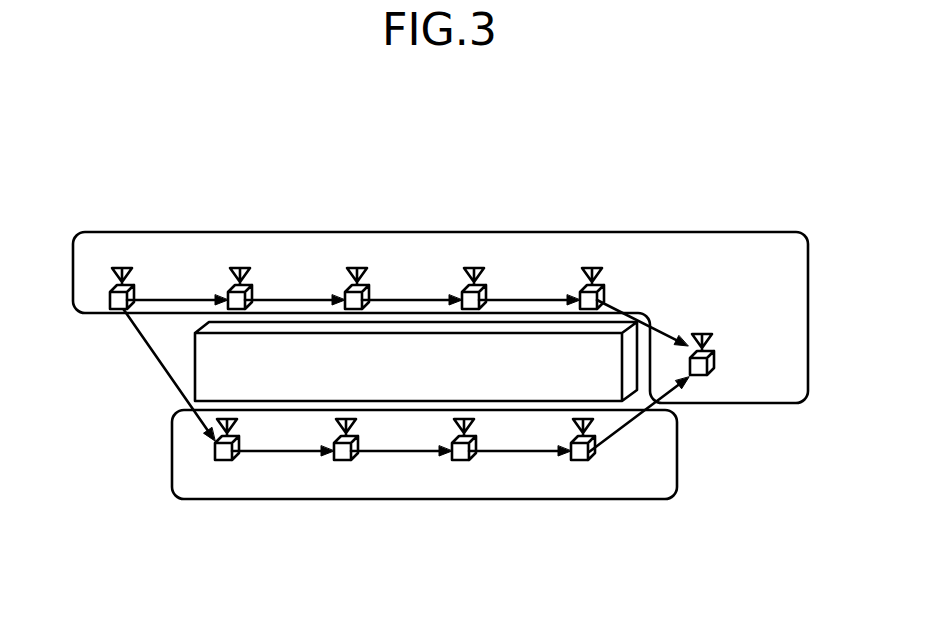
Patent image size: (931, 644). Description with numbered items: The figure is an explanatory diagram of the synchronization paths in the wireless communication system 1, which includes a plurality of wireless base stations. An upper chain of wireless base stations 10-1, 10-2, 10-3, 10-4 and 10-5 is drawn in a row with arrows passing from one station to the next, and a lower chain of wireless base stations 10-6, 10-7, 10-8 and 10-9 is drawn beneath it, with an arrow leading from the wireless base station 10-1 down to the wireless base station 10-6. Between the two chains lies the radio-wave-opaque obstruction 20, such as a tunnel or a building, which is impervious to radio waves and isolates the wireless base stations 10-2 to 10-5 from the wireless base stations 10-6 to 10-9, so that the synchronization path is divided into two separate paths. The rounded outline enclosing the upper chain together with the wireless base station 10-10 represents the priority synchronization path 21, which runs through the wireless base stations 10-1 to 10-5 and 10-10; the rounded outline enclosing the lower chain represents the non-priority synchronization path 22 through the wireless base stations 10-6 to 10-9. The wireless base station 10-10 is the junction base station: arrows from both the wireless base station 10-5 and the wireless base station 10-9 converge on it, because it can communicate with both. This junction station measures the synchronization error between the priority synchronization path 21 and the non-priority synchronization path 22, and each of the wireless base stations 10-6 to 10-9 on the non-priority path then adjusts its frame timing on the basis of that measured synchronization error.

The wireless communication system 1 is at (537, 146).
The wireless base station 10-1 is at (122, 268).
The wireless base station 10-2 is at (240, 268).
The wireless base station 10-3 is at (357, 268).
The wireless base station 10-4 is at (474, 268).
The wireless base station 10-5 is at (592, 268).
The wireless base station 10-6 is at (226, 461).
The wireless base station 10-7 is at (345, 461).
The wireless base station 10-8 is at (463, 461).
The wireless base station 10-9 is at (581, 461).
The wireless base station 10-10 is at (704, 334).
The obstruction 20 is at (639, 356).
The priority synchronization path 21 is at (712, 232).
The non-priority synchronization path 22 is at (652, 499).